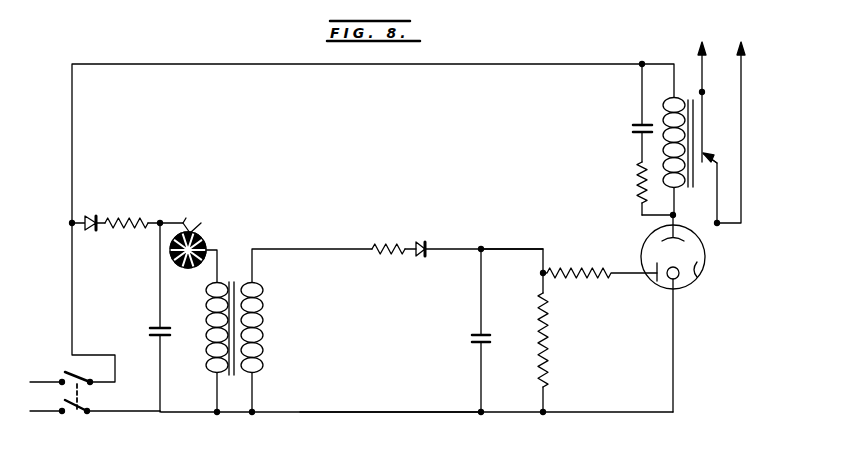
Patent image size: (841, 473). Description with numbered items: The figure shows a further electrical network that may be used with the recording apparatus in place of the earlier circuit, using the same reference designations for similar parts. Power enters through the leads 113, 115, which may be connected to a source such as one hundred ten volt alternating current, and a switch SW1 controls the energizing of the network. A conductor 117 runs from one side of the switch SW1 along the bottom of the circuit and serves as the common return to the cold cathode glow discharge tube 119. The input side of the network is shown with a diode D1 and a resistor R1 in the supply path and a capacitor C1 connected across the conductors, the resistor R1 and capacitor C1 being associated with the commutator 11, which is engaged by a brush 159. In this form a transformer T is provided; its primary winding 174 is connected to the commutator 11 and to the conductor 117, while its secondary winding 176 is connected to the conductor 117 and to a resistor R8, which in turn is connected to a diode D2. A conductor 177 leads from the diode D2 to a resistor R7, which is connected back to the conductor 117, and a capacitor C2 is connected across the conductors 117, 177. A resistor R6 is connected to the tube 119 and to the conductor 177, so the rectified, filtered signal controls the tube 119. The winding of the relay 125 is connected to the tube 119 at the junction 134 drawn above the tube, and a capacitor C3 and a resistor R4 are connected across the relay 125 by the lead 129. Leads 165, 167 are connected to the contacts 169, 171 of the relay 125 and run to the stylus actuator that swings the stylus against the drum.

The commutator 11 is at (201, 233).
The lead 113 is at (41, 375).
The lead 115 is at (37, 412).
The conductor 117 is at (383, 414).
The cold cathode glow discharge tube 119 is at (704, 269).
The relay 125 is at (700, 219).
The lead 129 is at (640, 100).
The junction 134 is at (645, 212).
The brush 159 is at (180, 223).
The lead 165 is at (702, 122).
The lead 167 is at (741, 186).
The contact 169 is at (709, 151).
The contact 171 is at (720, 157).
The primary winding 174 is at (208, 370).
The secondary winding 176 is at (263, 348).
The conductor 177 is at (513, 247).
The diode D1 is at (94, 215).
The resistor R1 is at (131, 218).
The capacitor C1 is at (150, 334).
The switch SW1 is at (64, 414).
The transformer T is at (275, 330).
The resistor R8 is at (384, 256).
The diode D2 is at (427, 244).
The capacitor C2 is at (471, 340).
The resistor R6 is at (581, 279).
The resistor R7 is at (548, 348).
The capacitor C3 is at (634, 132).
The resistor R4 is at (640, 186).